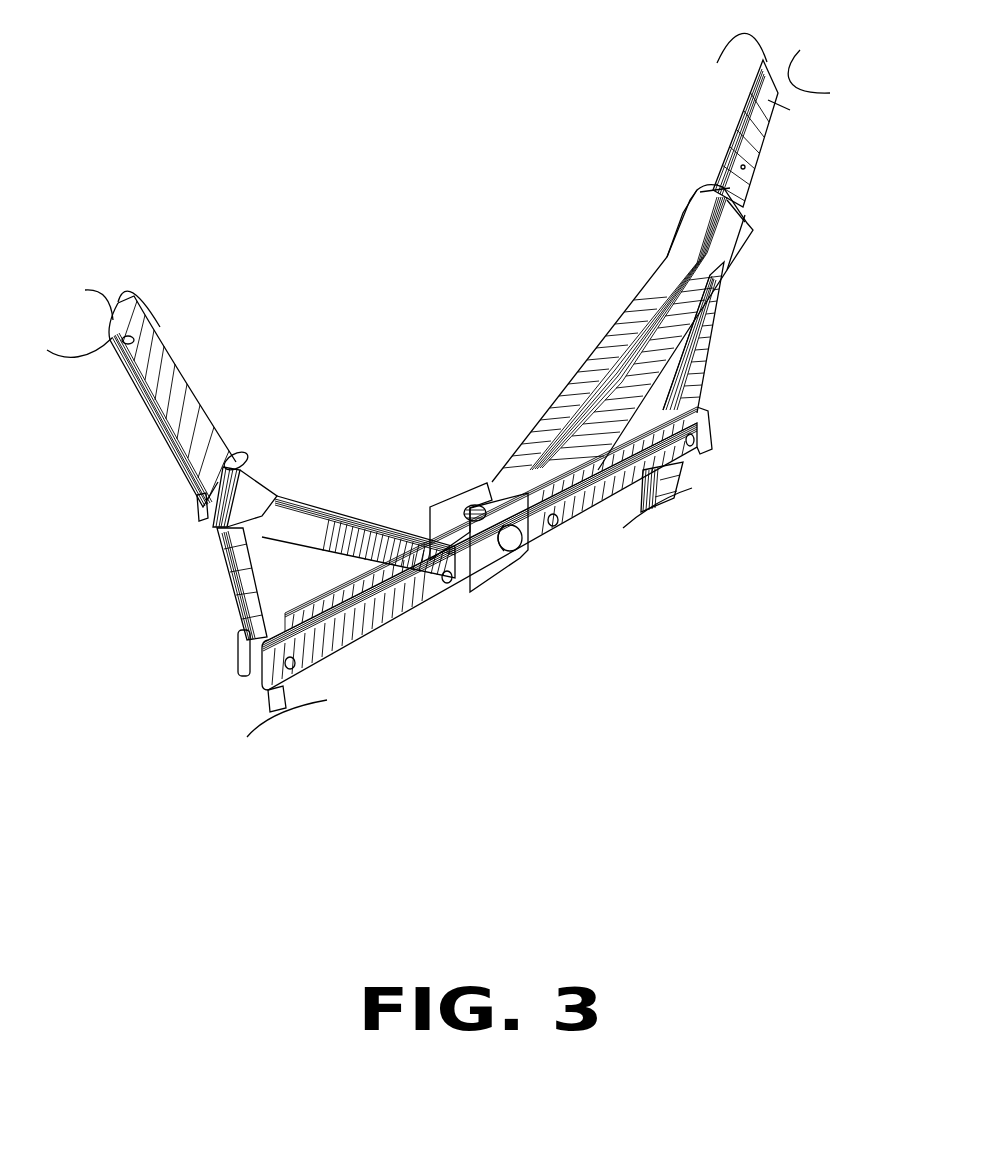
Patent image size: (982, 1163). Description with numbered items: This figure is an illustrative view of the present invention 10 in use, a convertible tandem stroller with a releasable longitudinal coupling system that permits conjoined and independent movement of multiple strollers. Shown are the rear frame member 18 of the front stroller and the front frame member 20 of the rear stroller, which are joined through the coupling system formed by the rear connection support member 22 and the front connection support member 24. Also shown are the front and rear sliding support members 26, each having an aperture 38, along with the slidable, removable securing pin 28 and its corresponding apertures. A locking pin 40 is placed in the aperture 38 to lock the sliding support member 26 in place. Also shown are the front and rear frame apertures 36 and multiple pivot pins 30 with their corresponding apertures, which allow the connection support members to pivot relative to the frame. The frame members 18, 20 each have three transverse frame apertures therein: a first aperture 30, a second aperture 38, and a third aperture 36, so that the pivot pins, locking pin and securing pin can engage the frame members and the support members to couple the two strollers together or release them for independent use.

The present invention 10 is at (573, 182).
The rear frame member 18 is at (160, 367).
The front frame member 20 is at (776, 112).
The rear connection support member 22 is at (285, 523).
The front connection support member 24 is at (705, 440).
The sliding support member 26 is at (665, 262).
The securing pin 28 is at (517, 540).
The pivot pin 30 is at (690, 442).
The frame aperture 36 is at (106, 350).
The aperture 38 is at (250, 492).
The locking pin 40 is at (740, 235).